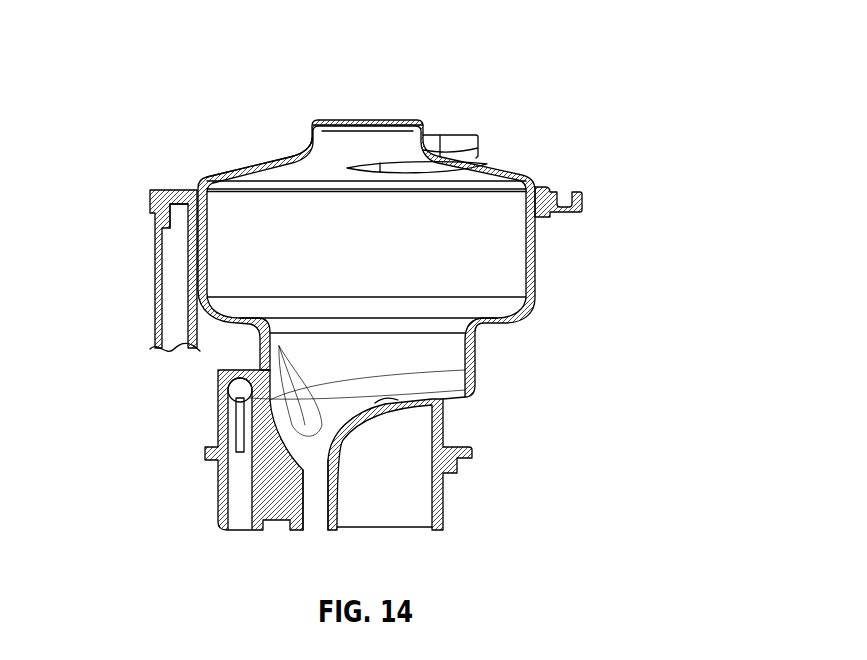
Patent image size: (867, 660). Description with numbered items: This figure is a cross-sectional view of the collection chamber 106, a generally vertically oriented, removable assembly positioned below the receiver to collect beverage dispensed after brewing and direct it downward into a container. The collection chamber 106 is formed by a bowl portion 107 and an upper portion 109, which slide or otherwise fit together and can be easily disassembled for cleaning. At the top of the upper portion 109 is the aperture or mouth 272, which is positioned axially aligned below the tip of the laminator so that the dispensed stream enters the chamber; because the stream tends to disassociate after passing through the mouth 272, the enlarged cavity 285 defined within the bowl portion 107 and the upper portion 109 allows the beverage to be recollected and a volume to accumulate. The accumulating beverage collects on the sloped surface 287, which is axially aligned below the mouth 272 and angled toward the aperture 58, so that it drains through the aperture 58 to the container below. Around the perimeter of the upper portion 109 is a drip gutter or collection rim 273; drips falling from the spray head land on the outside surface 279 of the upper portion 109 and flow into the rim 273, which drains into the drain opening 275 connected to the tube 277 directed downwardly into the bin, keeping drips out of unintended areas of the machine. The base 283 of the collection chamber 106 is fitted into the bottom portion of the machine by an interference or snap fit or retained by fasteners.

The aperture 58 is at (313, 518).
The collection chamber 106 is at (407, 306).
The bowl portion 107 is at (373, 436).
The upper portion 109 is at (338, 222).
The mouth 272 is at (378, 119).
The collection rim 273 is at (567, 192).
The drain opening 275 is at (175, 213).
The tube 277 is at (155, 282).
The outside surface 279 is at (293, 157).
The base 283 is at (215, 480).
The enlarged cavity 285 is at (502, 228).
The sloped surface 287 is at (450, 397).